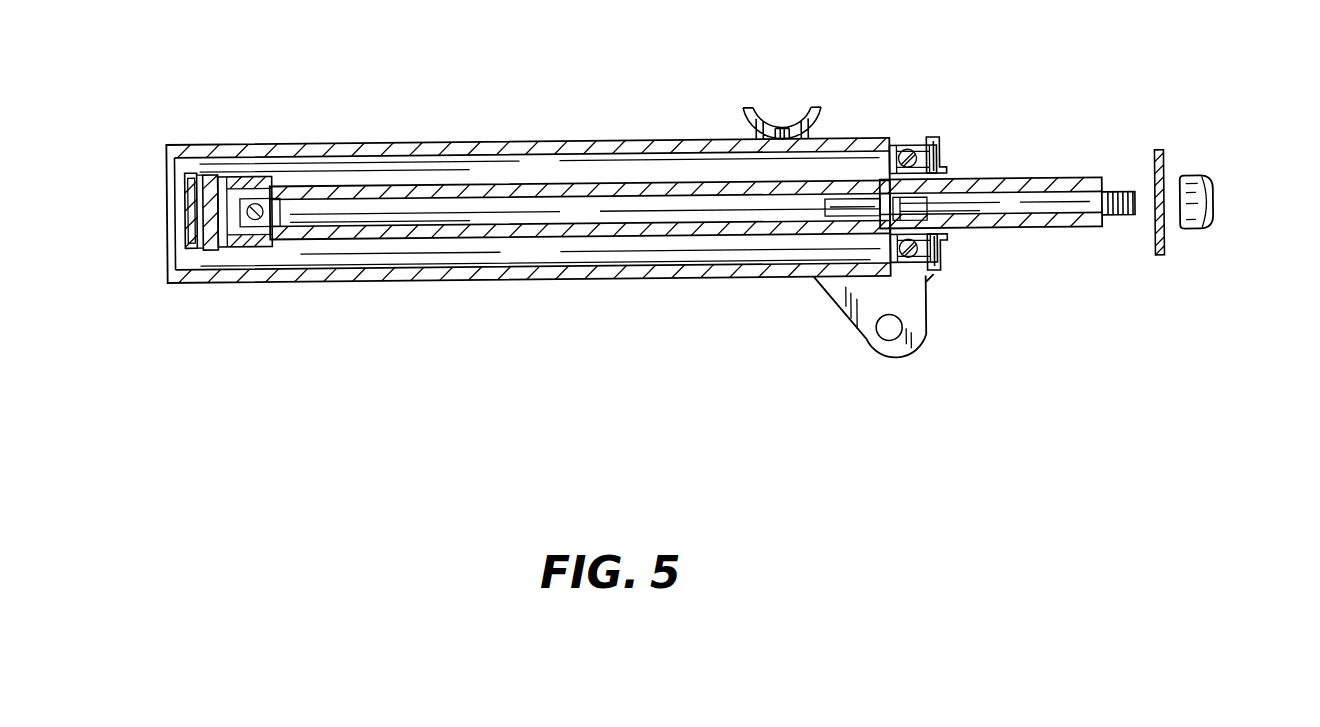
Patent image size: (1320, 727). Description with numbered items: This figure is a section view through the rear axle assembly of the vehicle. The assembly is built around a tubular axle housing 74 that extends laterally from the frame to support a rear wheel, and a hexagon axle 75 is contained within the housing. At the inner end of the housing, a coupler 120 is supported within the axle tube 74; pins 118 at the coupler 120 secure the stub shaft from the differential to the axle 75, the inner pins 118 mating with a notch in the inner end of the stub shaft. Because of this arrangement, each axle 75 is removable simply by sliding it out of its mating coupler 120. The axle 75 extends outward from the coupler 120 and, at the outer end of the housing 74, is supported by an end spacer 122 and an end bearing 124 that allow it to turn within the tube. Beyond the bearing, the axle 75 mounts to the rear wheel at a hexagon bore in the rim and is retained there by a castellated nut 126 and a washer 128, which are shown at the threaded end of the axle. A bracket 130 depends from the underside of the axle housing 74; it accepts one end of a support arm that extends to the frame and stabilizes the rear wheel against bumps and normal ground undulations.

The tubular axle housing 74 is at (512, 140).
The hexagon axle 75 is at (470, 240).
The pin 118 is at (273, 236).
The coupler 120 is at (164, 165).
The end spacer 122 is at (956, 166).
The end bearing 124 is at (940, 147).
The castellated nut 126 is at (1221, 192).
The washer 128 is at (1162, 262).
The bracket 130 is at (878, 362).